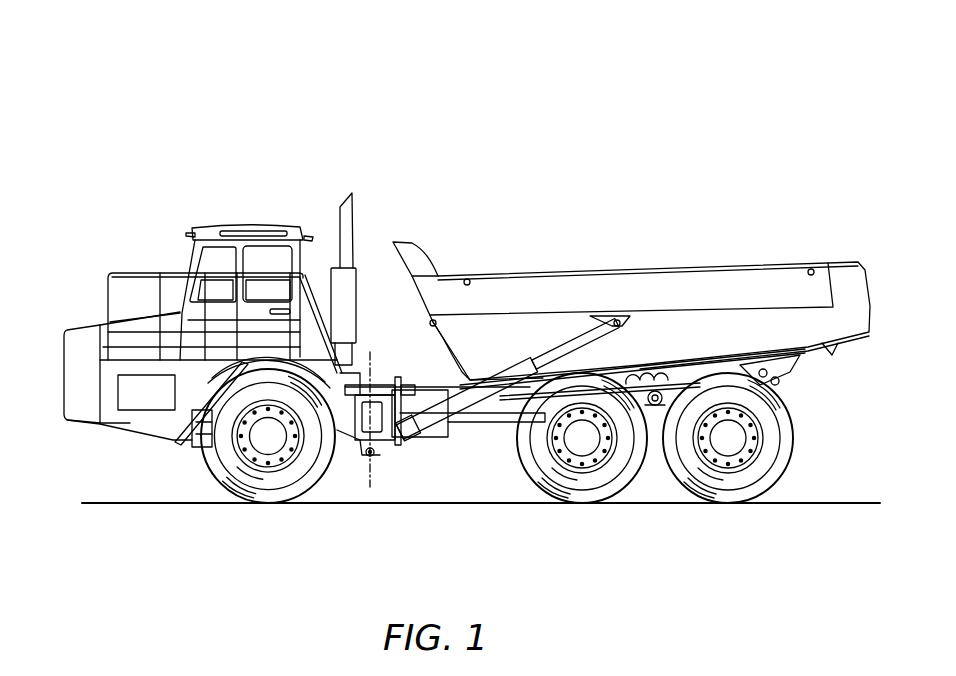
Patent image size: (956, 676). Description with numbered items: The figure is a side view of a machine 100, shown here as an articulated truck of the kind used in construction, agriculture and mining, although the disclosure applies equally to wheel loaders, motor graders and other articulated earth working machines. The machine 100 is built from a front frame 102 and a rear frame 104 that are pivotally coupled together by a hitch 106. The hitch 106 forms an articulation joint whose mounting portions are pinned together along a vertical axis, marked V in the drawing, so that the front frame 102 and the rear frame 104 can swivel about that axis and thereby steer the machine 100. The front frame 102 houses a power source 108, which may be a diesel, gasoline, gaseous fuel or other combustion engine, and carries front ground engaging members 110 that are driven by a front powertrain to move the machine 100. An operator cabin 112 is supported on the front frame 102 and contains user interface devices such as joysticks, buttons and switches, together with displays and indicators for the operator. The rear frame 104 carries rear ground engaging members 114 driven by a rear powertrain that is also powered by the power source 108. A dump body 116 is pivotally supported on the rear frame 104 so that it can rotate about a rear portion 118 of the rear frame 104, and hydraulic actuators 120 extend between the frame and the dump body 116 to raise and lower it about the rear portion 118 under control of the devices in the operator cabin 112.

The machine 100 is at (773, 79).
The front frame 102 is at (192, 442).
The rear frame 104 is at (492, 414).
The hitch 106 is at (372, 446).
The power source 108 is at (165, 406).
The front ground engaging members 110 is at (272, 505).
The operator cabin 112 is at (265, 248).
The rear ground engaging members 114 is at (585, 505).
The dump body 116 is at (641, 285).
The rear portion 118 is at (783, 365).
The hydraulic actuators 120 is at (447, 410).